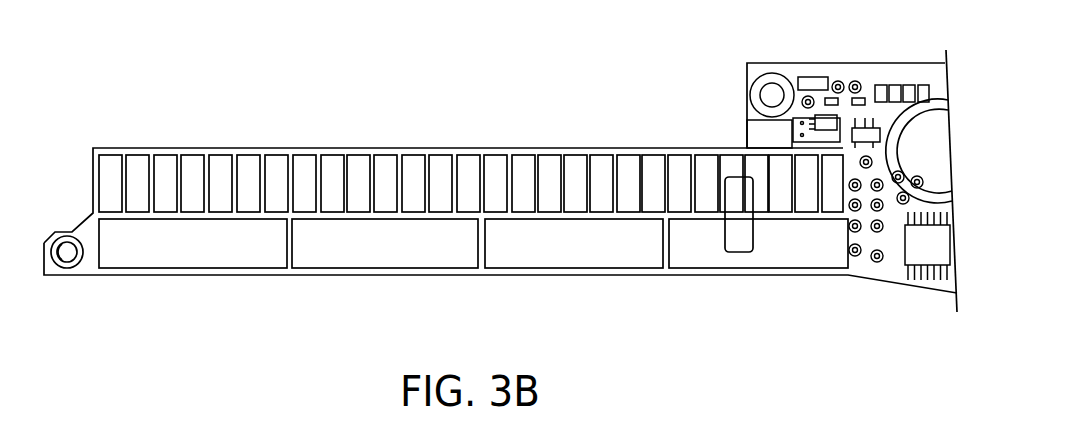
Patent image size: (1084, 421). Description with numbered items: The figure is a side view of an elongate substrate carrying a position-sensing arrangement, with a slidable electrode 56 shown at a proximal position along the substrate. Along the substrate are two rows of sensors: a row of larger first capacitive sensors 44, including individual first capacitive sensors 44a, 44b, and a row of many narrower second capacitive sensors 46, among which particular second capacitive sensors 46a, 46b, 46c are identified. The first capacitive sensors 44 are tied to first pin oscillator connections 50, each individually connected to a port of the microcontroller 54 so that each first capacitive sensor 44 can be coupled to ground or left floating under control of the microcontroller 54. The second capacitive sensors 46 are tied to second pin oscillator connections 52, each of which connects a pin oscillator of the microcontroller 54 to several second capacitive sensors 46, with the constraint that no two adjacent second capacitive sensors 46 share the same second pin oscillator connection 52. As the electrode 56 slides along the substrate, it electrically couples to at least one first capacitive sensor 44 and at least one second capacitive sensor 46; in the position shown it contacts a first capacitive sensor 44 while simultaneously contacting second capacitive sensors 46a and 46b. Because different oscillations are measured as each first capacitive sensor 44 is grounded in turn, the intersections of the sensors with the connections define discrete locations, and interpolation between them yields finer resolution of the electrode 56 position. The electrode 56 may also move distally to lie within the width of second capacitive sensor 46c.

The first capacitive sensor 44 is at (552, 250).
The first capacitive sensor 44a is at (675, 250).
The first capacitive sensor 44b is at (260, 237).
The second capacitive sensor 46 is at (500, 172).
The second capacitive sensor 46a is at (752, 150).
The second capacitive sensor 46b is at (723, 157).
The second capacitive sensor 46c is at (248, 173).
The first pin oscillator connection 50 is at (387, 265).
The second pin oscillator connection 52 is at (387, 176).
The microcontroller 54 is at (927, 250).
The electrode 56 is at (738, 253).